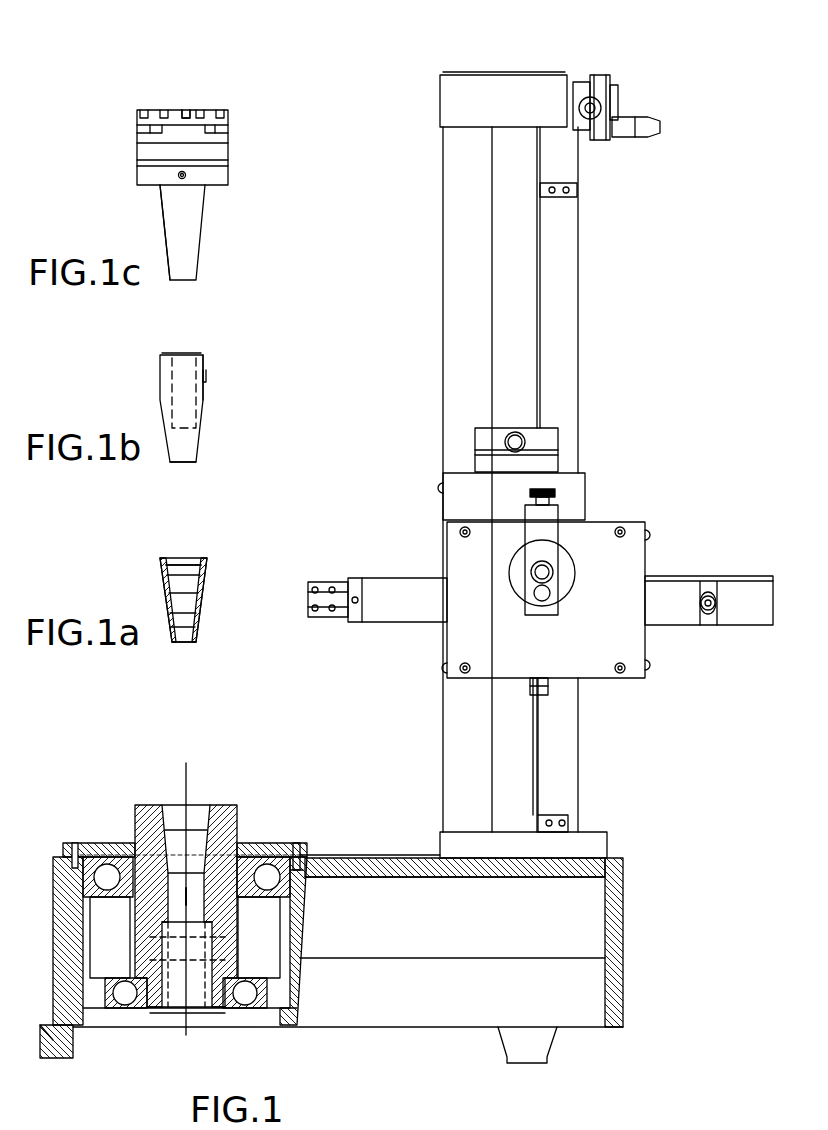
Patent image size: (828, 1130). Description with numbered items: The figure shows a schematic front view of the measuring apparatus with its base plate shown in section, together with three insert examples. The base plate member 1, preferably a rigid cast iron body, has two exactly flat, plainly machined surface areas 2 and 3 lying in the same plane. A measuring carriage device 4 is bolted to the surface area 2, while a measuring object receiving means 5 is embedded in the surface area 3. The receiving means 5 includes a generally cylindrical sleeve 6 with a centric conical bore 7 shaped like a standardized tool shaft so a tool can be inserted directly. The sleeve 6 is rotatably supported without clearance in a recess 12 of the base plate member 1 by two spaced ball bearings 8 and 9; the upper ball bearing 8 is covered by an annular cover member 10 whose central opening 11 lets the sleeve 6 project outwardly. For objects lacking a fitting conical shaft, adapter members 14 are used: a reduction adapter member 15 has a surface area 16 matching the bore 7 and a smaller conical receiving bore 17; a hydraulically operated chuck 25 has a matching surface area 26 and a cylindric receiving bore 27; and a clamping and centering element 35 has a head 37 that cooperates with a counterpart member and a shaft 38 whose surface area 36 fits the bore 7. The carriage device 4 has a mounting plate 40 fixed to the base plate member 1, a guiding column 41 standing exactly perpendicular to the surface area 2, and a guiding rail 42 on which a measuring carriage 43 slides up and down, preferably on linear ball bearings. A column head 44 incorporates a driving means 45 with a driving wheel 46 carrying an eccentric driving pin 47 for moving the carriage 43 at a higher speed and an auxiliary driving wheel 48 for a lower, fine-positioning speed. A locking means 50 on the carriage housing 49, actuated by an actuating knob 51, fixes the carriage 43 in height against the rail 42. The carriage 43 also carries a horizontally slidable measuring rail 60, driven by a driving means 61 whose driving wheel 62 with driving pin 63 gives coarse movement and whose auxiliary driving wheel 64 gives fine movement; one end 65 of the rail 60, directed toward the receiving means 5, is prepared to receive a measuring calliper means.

In FIG. 1, the base plate member 1 is at (612, 938).
In FIG. 1, the plainly machined surface area 2 is at (522, 878).
In FIG. 1, the plainly machined surface area 3 is at (318, 840).
In FIG. 1, the measuring carriage device 4 is at (540, 439).
In FIG. 1, the measuring object receiving means 5 is at (163, 896).
In FIG. 1, the cylindrical sleeve 6 is at (227, 805).
In FIG. 1, the conical bore 7 is at (194, 810).
In FIG. 1, the upper ball bearing 8 is at (275, 900).
In FIG. 1, the lower ball bearing 9 is at (110, 975).
In FIG. 1, the annular cover member 10 is at (103, 845).
In FIG. 1, the central opening 11 is at (133, 850).
In FIG. 1, the recess 12 is at (95, 957).
In FIG. 1C, the adapter member 14 is at (197, 163).
In FIG. 1B, the adapter member 14 is at (229, 387).
In FIG. 1A, the adapter member 14 is at (213, 567).
In FIG. 1A, the reduction adapter member 15 is at (212, 597).
In FIG. 1A, the surface area 16 is at (203, 634).
In FIG. 1A, the conical receiving bore 17 is at (182, 563).
In FIG. 1B, the chuck 25 is at (206, 405).
In FIG. 1B, the surface area 26 is at (202, 447).
In FIG. 1B, the receiving bore 27 is at (180, 370).
In FIG. 1C, the clamping and centering element 35 is at (226, 200).
In FIG. 1C, the surface area 36 is at (185, 248).
In FIG. 1C, the head 37 is at (193, 105).
In FIG. 1C, the shaft 38 is at (157, 212).
In FIG. 1, the mounting plate 40 is at (595, 843).
In FIG. 1, the guiding column 41 is at (471, 258).
In FIG. 1, the guiding rail 42 is at (518, 290).
In FIG. 1, the measuring carriage 43 is at (627, 555).
In FIG. 1, the column head 44 is at (517, 95).
In FIG. 1, the driving means 45 is at (644, 103).
In FIG. 1, the driving wheel 46 is at (618, 78).
In FIG. 1, the driving pin 47 is at (648, 128).
In FIG. 1, the auxiliary driving wheel 48 is at (583, 128).
In FIG. 1, the carriage housing 49 is at (575, 497).
In FIG. 1, the locking means 50 is at (558, 423).
In FIG. 1, the actuating knob 51 is at (521, 432).
In FIG. 1, the measuring rail 60 is at (398, 598).
In FIG. 1, the driving means 61 is at (513, 595).
In FIG. 1, the driving wheel 62 is at (565, 585).
In FIG. 1, the driving pin 63 is at (545, 598).
In FIG. 1, the auxiliary driving wheel 64 is at (527, 490).
In FIG. 1, the end of measuring rail 65 is at (330, 580).